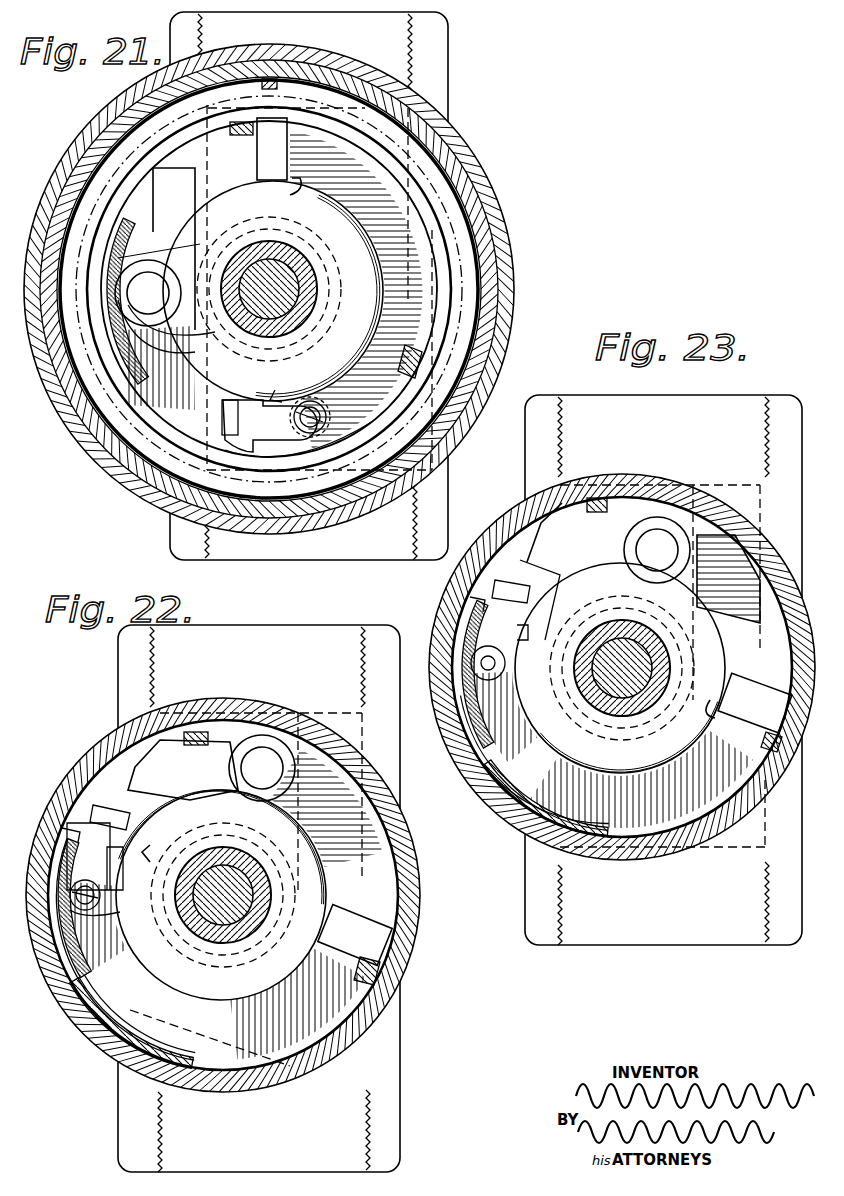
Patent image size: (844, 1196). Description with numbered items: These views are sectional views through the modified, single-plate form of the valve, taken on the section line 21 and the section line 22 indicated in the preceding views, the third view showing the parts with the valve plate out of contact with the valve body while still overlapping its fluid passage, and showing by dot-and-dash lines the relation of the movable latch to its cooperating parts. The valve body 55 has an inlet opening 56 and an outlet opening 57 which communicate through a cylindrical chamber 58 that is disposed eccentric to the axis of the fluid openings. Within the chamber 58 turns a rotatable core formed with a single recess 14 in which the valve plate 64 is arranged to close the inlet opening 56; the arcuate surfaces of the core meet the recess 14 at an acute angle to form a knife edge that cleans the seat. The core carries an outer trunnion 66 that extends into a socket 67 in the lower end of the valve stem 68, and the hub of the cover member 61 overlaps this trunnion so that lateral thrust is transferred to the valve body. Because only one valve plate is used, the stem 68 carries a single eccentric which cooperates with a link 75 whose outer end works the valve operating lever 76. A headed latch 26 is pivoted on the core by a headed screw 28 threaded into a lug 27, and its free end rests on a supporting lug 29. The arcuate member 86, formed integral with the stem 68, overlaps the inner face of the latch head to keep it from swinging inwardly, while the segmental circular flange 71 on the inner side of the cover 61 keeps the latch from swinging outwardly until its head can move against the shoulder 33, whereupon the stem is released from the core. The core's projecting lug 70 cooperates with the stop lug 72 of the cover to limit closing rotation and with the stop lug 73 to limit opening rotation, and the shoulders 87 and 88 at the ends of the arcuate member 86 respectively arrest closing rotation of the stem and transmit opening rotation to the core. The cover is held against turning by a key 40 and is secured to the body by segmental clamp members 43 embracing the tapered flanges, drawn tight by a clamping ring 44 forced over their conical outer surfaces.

In FIG. 21, the recess 14 is at (183, 422).
In FIG. 22, the recess 14 is at (121, 776).
In FIG. 23, the recess 14 is at (524, 534).
In FIG. 21, the arm 21 is at (204, 248).
In FIG. 22, the arm 21 is at (270, 750).
In FIG. 23, the arm 21 is at (636, 553).
In FIG. 21, the arm extension 22 is at (152, 321).
In FIG. 22, the arm extension 22 is at (240, 770).
In FIG. 23, the arm extension 22 is at (650, 537).
In FIG. 21, the latch 26 is at (277, 430).
In FIG. 22, the latch 26 is at (112, 866).
In FIG. 23, the latch 26 is at (532, 622).
In FIG. 21, the lug 27 is at (335, 418).
In FIG. 22, the lug 27 is at (100, 916).
In FIG. 23, the lug 27 is at (500, 665).
In FIG. 21, the headed screw 28 is at (312, 400).
In FIG. 22, the headed screw 28 is at (100, 893).
In FIG. 21, the lug 29 is at (232, 400).
In FIG. 22, the lug 29 is at (114, 806).
In FIG. 23, the lug 29 is at (532, 586).
In FIG. 21, the shoulder 33 is at (117, 240).
In FIG. 22, the shoulder 33 is at (68, 834).
In FIG. 23, the shoulder 33 is at (476, 607).
In FIG. 21, the key 40 is at (280, 76).
In FIG. 21, the segmental clamp members 43 is at (365, 108).
In FIG. 21, the clamping ring 44 is at (348, 78).
In FIG. 21, the valve body 55 is at (513, 262).
In FIG. 22, the valve body 55 is at (414, 856).
In FIG. 23, the valve body 55 is at (458, 764).
In FIG. 21, the inlet opening 56 is at (400, 60).
In FIG. 22, the inlet opening 56 is at (353, 636).
In FIG. 23, the inlet opening 56 is at (725, 410).
In FIG. 21, the outlet opening 57 is at (210, 562).
In FIG. 22, the outlet opening 57 is at (160, 1130).
In FIG. 23, the outlet opening 57 is at (562, 935).
In FIG. 22, the cylindrical chamber 58 is at (122, 1046).
In FIG. 23, the cylindrical chamber 58 is at (520, 815).
In FIG. 22, the cover member 61 is at (75, 988).
In FIG. 23, the cover member 61 is at (452, 722).
In FIG. 21, the valve plate 64 is at (172, 183).
In FIG. 22, the valve plate 64 is at (152, 763).
In FIG. 23, the valve plate 64 is at (726, 542).
In FIG. 21, the outer trunnion 66 is at (282, 265).
In FIG. 22, the outer trunnion 66 is at (228, 940).
In FIG. 23, the outer trunnion 66 is at (592, 690).
In FIG. 21, the socket 67 is at (308, 304).
In FIG. 22, the socket 67 is at (196, 932).
In FIG. 23, the socket 67 is at (647, 705).
In FIG. 21, the valve stem 68 is at (302, 280).
In FIG. 22, the valve stem 68 is at (252, 935).
In FIG. 23, the valve stem 68 is at (622, 668).
In FIG. 21, the projecting lug 70 is at (257, 170).
In FIG. 22, the projecting lug 70 is at (330, 933).
In FIG. 23, the projecting lug 70 is at (746, 692).
In FIG. 22, the segmental circular flange 71 is at (100, 1014).
In FIG. 23, the segmental circular flange 71 is at (478, 793).
In FIG. 21, the stop lug 72 is at (410, 362).
In FIG. 22, the stop lug 72 is at (382, 978).
In FIG. 23, the stop lug 72 is at (772, 755).
In FIG. 21, the stop lug 73 is at (240, 135).
In FIG. 22, the stop lug 73 is at (195, 730).
In FIG. 23, the stop lug 73 is at (590, 512).
In FIG. 21, the link 75 is at (168, 247).
In FIG. 22, the link 75 is at (220, 792).
In FIG. 23, the link 75 is at (700, 590).
In FIG. 21, the valve operating lever 76 is at (148, 293).
In FIG. 22, the valve operating lever 76 is at (262, 768).
In FIG. 23, the valve operating lever 76 is at (657, 550).
In FIG. 21, the arcuate member 86 is at (368, 235).
In FIG. 22, the arcuate member 86 is at (335, 862).
In FIG. 23, the arcuate member 86 is at (588, 770).
In FIG. 21, the shoulder 87 is at (276, 394).
In FIG. 22, the shoulder 87 is at (327, 905).
In FIG. 23, the shoulder 87 is at (618, 698).
In FIG. 21, the shoulder 88 is at (291, 192).
In FIG. 22, the shoulder 88 is at (156, 848).
In FIG. 23, the shoulder 88 is at (705, 697).